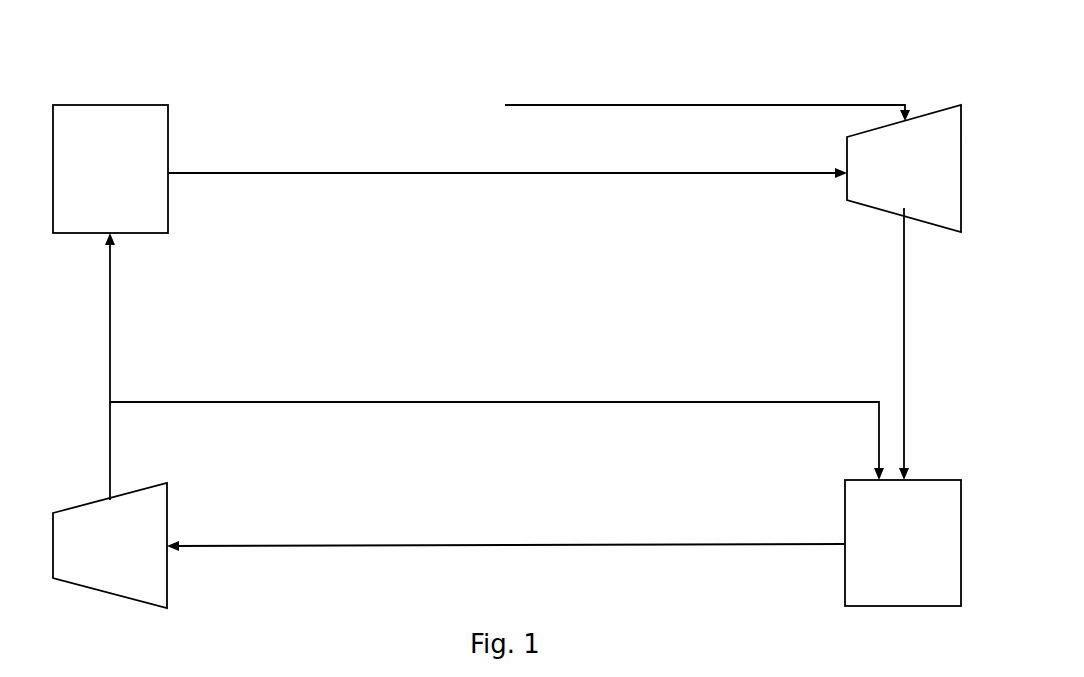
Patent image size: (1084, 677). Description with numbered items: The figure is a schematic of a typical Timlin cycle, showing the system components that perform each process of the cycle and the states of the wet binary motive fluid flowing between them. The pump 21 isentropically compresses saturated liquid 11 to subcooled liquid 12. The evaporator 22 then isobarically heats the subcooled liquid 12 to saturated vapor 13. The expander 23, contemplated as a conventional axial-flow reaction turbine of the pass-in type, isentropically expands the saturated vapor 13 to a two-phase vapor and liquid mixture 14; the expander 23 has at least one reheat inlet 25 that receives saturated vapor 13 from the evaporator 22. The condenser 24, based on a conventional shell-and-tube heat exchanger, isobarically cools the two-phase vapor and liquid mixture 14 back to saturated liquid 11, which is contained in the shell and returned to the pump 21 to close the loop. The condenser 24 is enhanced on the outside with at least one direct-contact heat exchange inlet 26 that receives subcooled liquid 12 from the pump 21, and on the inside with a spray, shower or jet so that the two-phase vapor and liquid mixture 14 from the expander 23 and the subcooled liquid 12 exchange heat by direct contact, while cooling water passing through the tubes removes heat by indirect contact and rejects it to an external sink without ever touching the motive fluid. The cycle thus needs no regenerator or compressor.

The saturated liquid 11 is at (505, 565).
The subcooled liquid 12 is at (93, 354).
The saturated vapor 13 is at (505, 105).
The two-phase vapor and liquid mixture 14 is at (923, 352).
The pump 21 is at (175, 515).
The evaporator 22 is at (177, 194).
The expander 23 is at (835, 183).
The condenser 24 is at (833, 503).
The reheat inlet 25 is at (890, 124).
The direct-contact heat exchange inlet 26 is at (878, 468).